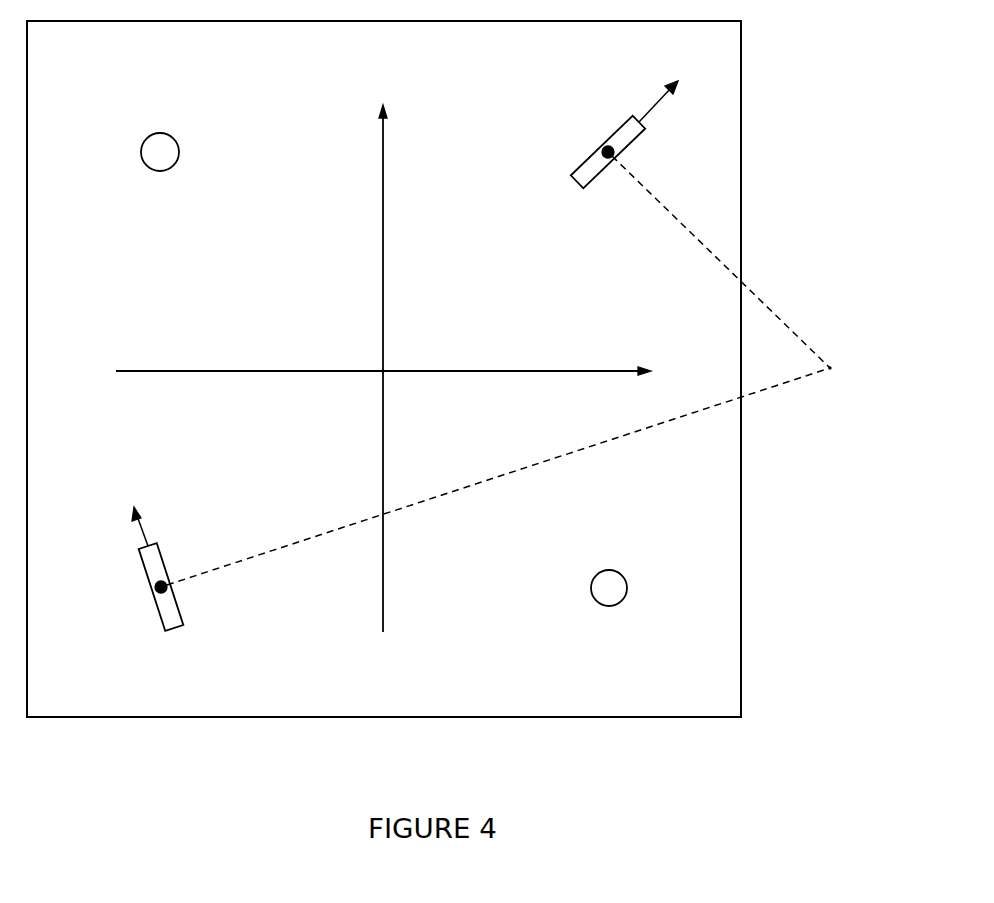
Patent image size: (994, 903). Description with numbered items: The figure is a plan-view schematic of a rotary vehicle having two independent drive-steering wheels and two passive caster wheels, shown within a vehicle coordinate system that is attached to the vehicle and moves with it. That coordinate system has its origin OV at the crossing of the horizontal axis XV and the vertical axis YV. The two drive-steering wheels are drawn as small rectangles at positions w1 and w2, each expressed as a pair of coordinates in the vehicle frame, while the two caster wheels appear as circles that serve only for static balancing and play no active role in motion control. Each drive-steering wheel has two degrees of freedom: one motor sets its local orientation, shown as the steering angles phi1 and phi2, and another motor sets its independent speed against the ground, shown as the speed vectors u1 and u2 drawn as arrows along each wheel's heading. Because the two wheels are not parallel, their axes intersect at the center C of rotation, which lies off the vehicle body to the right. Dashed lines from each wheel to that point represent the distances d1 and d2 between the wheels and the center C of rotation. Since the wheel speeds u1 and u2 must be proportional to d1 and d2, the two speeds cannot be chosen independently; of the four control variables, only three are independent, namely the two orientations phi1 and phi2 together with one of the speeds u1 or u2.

The first drive-steering wheel position w1 is at (528, 147).
The second drive-steering wheel position w2 is at (254, 587).
The first wheel speed u1 is at (666, 108).
The second wheel speed u2 is at (123, 523).
The first wheel local orientation phi1 is at (701, 61).
The second wheel local orientation phi2 is at (135, 484).
The first wheel distance to center of rotation d1 is at (721, 262).
The second wheel distance to center of rotation d2 is at (498, 476).
The center of rotation C is at (847, 372).
The vehicle coordinate system X axis XV is at (404, 369).
The vehicle coordinate system Y axis YV is at (373, 348).
The vehicle coordinate system origin OV is at (353, 397).